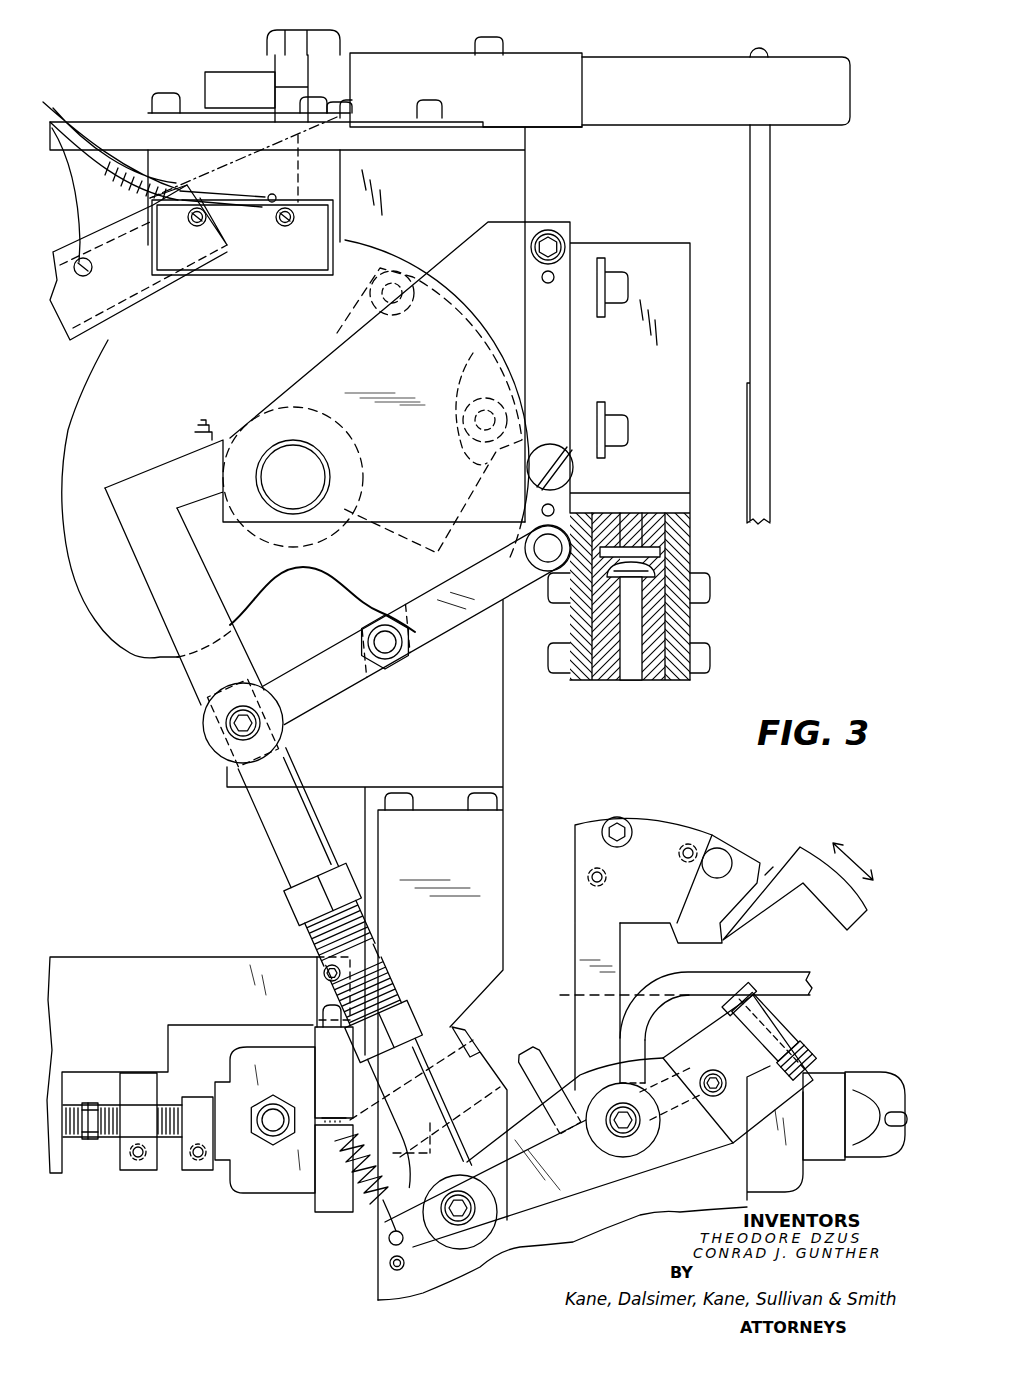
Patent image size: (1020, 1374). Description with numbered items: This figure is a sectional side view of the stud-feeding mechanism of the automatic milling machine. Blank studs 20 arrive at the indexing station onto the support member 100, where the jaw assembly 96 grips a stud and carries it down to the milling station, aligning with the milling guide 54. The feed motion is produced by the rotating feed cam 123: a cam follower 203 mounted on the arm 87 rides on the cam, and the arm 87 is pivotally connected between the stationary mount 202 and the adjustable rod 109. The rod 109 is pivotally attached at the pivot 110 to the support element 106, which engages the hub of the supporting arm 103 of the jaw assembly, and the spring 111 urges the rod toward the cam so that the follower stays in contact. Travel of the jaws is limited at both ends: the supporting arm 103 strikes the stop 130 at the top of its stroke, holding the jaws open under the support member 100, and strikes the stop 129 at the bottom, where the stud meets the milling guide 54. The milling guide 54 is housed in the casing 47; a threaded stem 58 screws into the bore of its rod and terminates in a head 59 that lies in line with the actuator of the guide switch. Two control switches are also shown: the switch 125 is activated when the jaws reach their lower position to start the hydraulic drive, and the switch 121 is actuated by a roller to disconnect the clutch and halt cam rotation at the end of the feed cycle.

The blank stud 20 is at (624, 606).
The casing 47 is at (260, 1195).
The milling guide 54 is at (890, 1080).
The threaded stem 58 is at (108, 1140).
The head 59 is at (70, 1142).
The arm 87 is at (310, 712).
The jaw assembly 96 is at (777, 863).
The support member 100 is at (652, 682).
The supporting arm 103 is at (575, 975).
The support element 106 is at (553, 1195).
The adjustable rod 109 is at (267, 827).
The pivotal attachment 110 is at (467, 1250).
The spring 111 is at (363, 1210).
The switch 121 is at (100, 333).
The feed cam 123 is at (110, 622).
The switch 125 is at (250, 277).
The stop 129 is at (733, 1008).
The stop 130 is at (470, 1035).
The stationary mount 202 is at (545, 573).
The cam follower 203 is at (413, 663).